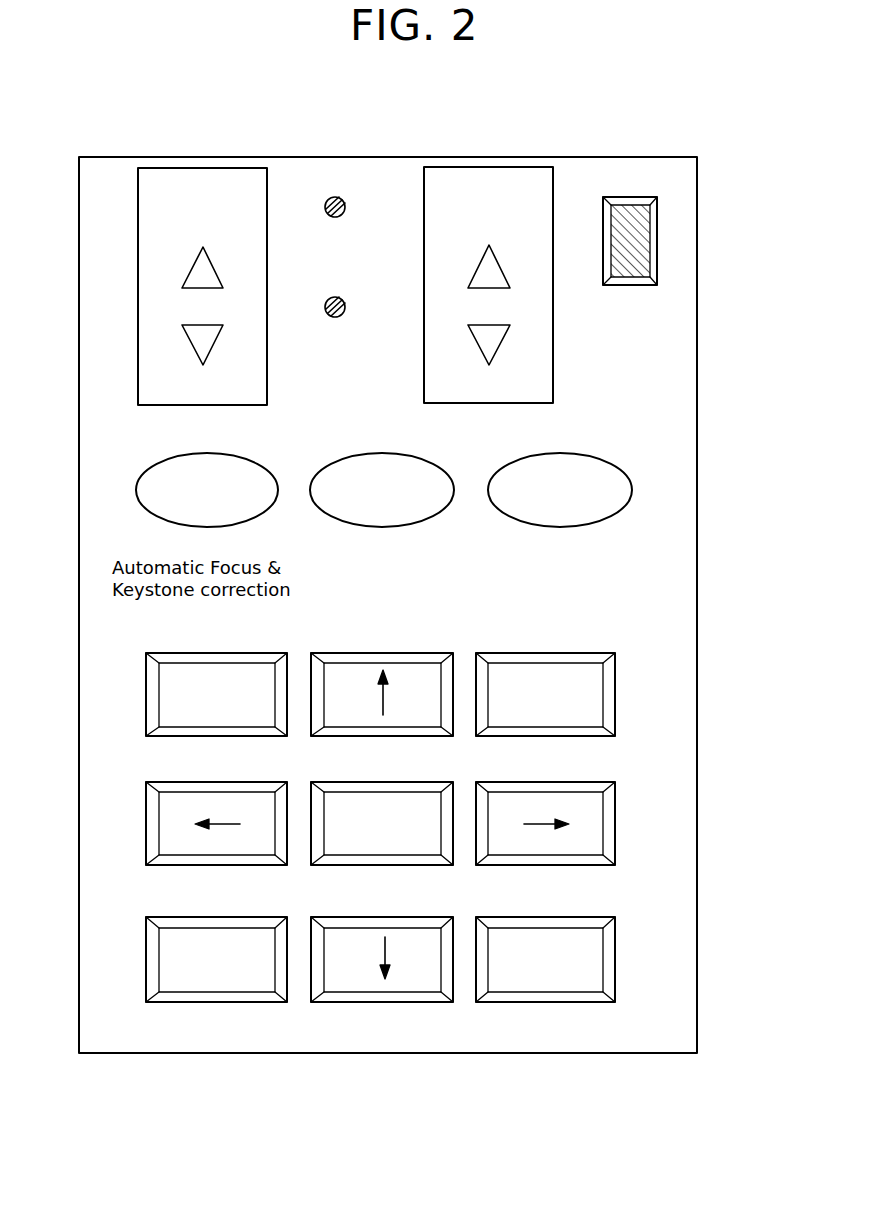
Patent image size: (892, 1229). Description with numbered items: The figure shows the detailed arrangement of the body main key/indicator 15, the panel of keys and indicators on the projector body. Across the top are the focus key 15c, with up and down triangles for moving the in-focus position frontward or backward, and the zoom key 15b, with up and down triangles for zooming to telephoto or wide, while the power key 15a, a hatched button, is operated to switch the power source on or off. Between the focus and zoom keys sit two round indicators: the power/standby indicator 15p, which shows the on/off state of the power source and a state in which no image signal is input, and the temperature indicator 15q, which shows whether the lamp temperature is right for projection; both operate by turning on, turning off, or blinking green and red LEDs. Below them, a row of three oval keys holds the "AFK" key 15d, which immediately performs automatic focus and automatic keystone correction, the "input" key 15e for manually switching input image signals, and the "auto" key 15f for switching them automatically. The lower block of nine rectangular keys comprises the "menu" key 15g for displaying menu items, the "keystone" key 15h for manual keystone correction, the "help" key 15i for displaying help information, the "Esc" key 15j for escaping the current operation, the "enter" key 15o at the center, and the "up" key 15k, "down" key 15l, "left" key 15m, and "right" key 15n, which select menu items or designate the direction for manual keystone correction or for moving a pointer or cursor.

The body main key/indicator 15 is at (697, 197).
The power key 15a is at (630, 197).
The zoom key 15b is at (527, 167).
The focus key 15c is at (245, 168).
The "AFK" key 15d is at (222, 455).
The "input" key 15e is at (390, 455).
The "auto" key 15f is at (572, 455).
The "menu" key 15g is at (216, 652).
The "keystone" key 15h is at (552, 652).
The "help" key 15i is at (216, 916).
The "Esc" key 15j is at (534, 913).
The "up" key 15k is at (381, 652).
The "down" key 15l is at (388, 916).
The "left" key 15m is at (216, 781).
The "right" key 15n is at (536, 781).
The "enter" key 15o is at (391, 781).
The power/standby indicator 15p is at (343, 200).
The temperature indicator 15q is at (343, 300).